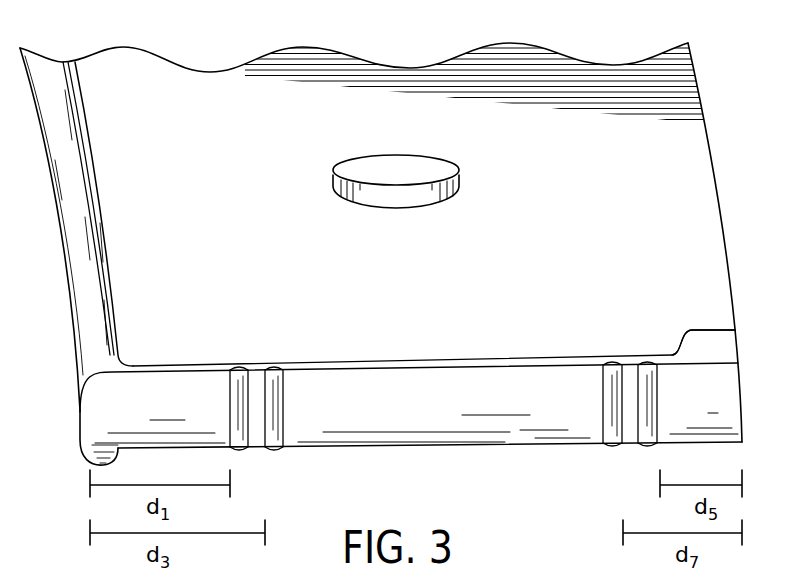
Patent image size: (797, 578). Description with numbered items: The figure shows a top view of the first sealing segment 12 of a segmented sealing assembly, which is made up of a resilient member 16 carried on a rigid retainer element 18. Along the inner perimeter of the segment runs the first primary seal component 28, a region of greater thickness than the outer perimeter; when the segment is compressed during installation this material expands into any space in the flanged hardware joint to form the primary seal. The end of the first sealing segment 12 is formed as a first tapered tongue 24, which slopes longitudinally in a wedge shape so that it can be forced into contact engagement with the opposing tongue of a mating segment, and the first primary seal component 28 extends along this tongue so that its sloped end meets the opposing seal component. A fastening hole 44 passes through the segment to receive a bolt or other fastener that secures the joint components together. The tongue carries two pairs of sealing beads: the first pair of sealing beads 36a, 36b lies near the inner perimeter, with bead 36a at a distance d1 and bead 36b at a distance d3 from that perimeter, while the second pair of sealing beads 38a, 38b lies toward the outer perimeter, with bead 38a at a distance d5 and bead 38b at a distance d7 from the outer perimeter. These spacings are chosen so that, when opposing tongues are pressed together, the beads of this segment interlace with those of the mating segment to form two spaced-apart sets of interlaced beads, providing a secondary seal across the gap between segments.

The first sealing segment 12 is at (406, 261).
The rigid retainer element 18 is at (713, 155).
The resilient member 16 is at (738, 343).
The first primary seal component 28 is at (60, 224).
The fastening hole 44 is at (403, 193).
The first tapered tongue 24 is at (411, 391).
The sealing bead 36a is at (240, 372).
The sealing bead 36b is at (275, 372).
The sealing bead 38a is at (648, 366).
The sealing bead 38b is at (613, 366).